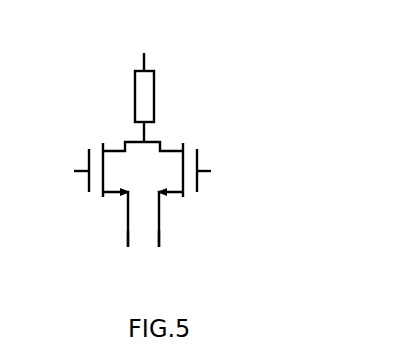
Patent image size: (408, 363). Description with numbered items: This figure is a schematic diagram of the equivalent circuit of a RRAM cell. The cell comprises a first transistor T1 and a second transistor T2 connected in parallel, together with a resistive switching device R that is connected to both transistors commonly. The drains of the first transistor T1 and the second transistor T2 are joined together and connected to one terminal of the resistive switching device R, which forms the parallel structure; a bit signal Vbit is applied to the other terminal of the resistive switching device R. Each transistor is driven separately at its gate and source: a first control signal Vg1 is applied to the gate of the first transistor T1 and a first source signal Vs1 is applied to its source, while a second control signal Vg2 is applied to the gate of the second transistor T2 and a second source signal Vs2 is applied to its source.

The bit signal Vbit is at (142, 52).
The resistive switching device R is at (154, 106).
The first transistor T1 is at (108, 183).
The second transistor T2 is at (179, 183).
The first control signal Vg1 is at (61, 174).
The second control signal Vg2 is at (222, 171).
The first source signal Vs1 is at (121, 250).
The second source signal Vs2 is at (165, 250).